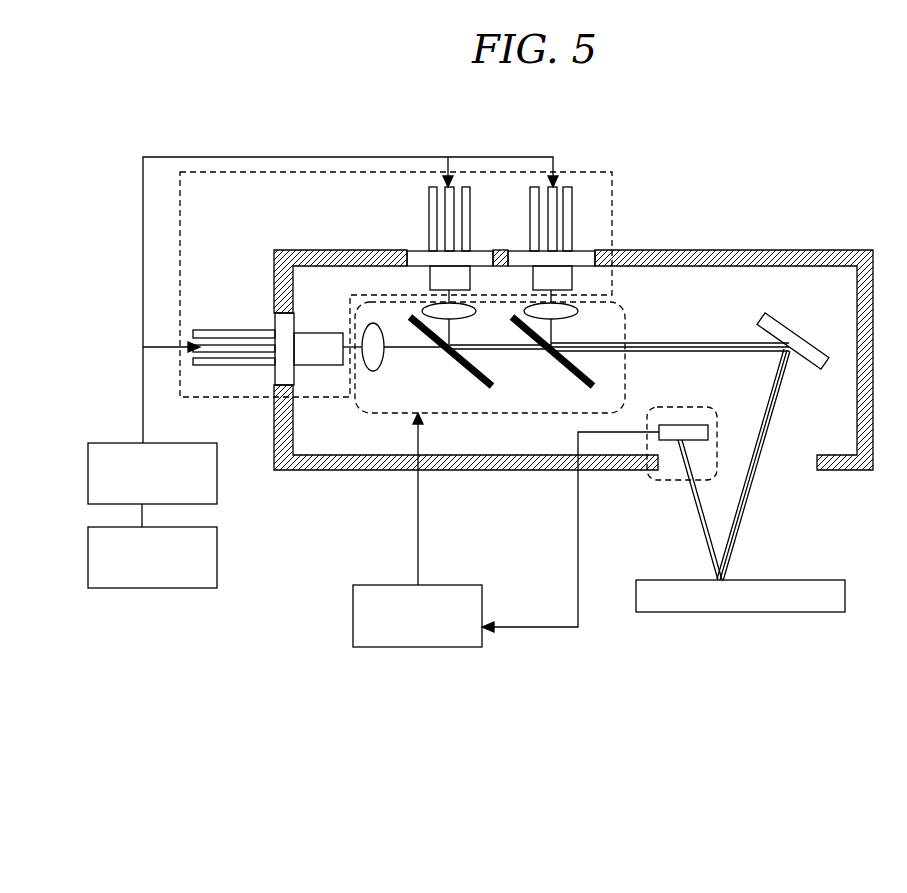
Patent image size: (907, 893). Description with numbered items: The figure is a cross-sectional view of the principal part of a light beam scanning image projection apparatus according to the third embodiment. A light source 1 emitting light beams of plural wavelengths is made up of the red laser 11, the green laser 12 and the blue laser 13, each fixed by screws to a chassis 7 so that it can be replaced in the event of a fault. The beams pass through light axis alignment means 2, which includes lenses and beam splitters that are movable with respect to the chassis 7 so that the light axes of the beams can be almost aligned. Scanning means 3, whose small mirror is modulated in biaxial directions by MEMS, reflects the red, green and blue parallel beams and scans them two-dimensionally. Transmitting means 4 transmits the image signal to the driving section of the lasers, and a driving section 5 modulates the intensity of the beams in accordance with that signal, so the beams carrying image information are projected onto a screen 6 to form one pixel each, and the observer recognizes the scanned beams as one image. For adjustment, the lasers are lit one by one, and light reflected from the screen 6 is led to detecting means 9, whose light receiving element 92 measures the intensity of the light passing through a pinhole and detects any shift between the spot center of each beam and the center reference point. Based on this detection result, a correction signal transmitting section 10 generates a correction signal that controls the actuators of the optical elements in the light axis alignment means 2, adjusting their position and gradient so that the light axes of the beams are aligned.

The light source 1 is at (602, 183).
The light axis alignment means 2 is at (538, 410).
The scanning means 3 is at (786, 327).
The transmitting means 4 is at (217, 565).
The driving section 5 is at (217, 483).
The screen 6 is at (838, 580).
The chassis 7 is at (870, 250).
The detecting means 9 is at (665, 481).
The correction signal transmitting section 10 is at (460, 585).
The red laser 11 is at (427, 252).
The green laser 12 is at (260, 332).
The blue laser 13 is at (575, 262).
The light receiving element 92 is at (709, 431).